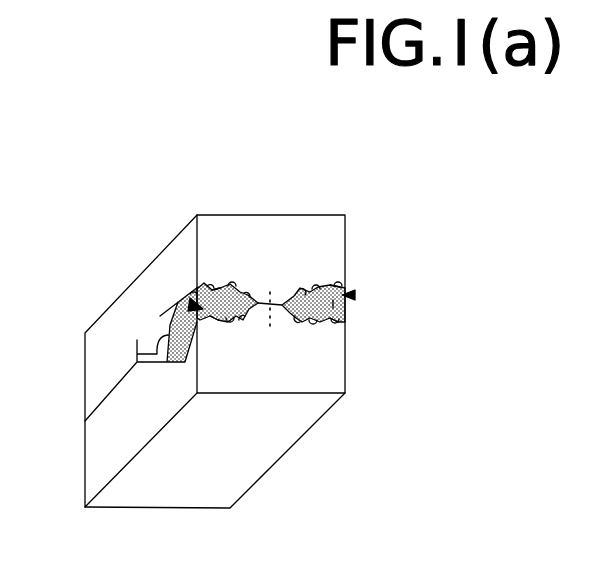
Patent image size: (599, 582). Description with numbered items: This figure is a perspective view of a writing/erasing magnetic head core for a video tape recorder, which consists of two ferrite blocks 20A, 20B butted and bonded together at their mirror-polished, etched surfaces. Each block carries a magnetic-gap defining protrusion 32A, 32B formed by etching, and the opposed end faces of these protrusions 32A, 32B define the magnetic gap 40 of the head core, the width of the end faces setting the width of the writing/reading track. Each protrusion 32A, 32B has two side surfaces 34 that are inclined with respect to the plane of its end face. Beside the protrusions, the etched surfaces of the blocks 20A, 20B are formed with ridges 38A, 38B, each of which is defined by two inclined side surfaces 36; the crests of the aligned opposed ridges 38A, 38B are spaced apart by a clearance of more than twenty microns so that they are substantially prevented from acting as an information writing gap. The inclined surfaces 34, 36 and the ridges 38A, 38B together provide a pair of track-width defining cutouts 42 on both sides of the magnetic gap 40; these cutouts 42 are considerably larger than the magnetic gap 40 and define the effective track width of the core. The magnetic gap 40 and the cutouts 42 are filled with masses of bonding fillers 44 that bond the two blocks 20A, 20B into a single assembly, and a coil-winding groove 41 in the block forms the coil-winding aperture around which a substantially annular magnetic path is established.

The ferrite block 20A is at (132, 292).
The ferrite block 20B is at (122, 494).
The magnetic-gap defining protrusion 32A is at (268, 300).
The magnetic-gap defining protrusion 32B is at (276, 305).
The side surface 34 is at (238, 288).
The side surface 36 is at (190, 290).
The ridge 38A is at (213, 287).
The ridge 38B is at (208, 332).
The magnetic gap 40 is at (296, 298).
The coil-winding groove 41 is at (137, 350).
The track-width defining cutout 42 is at (190, 303).
The bonding filler 44 is at (333, 304).